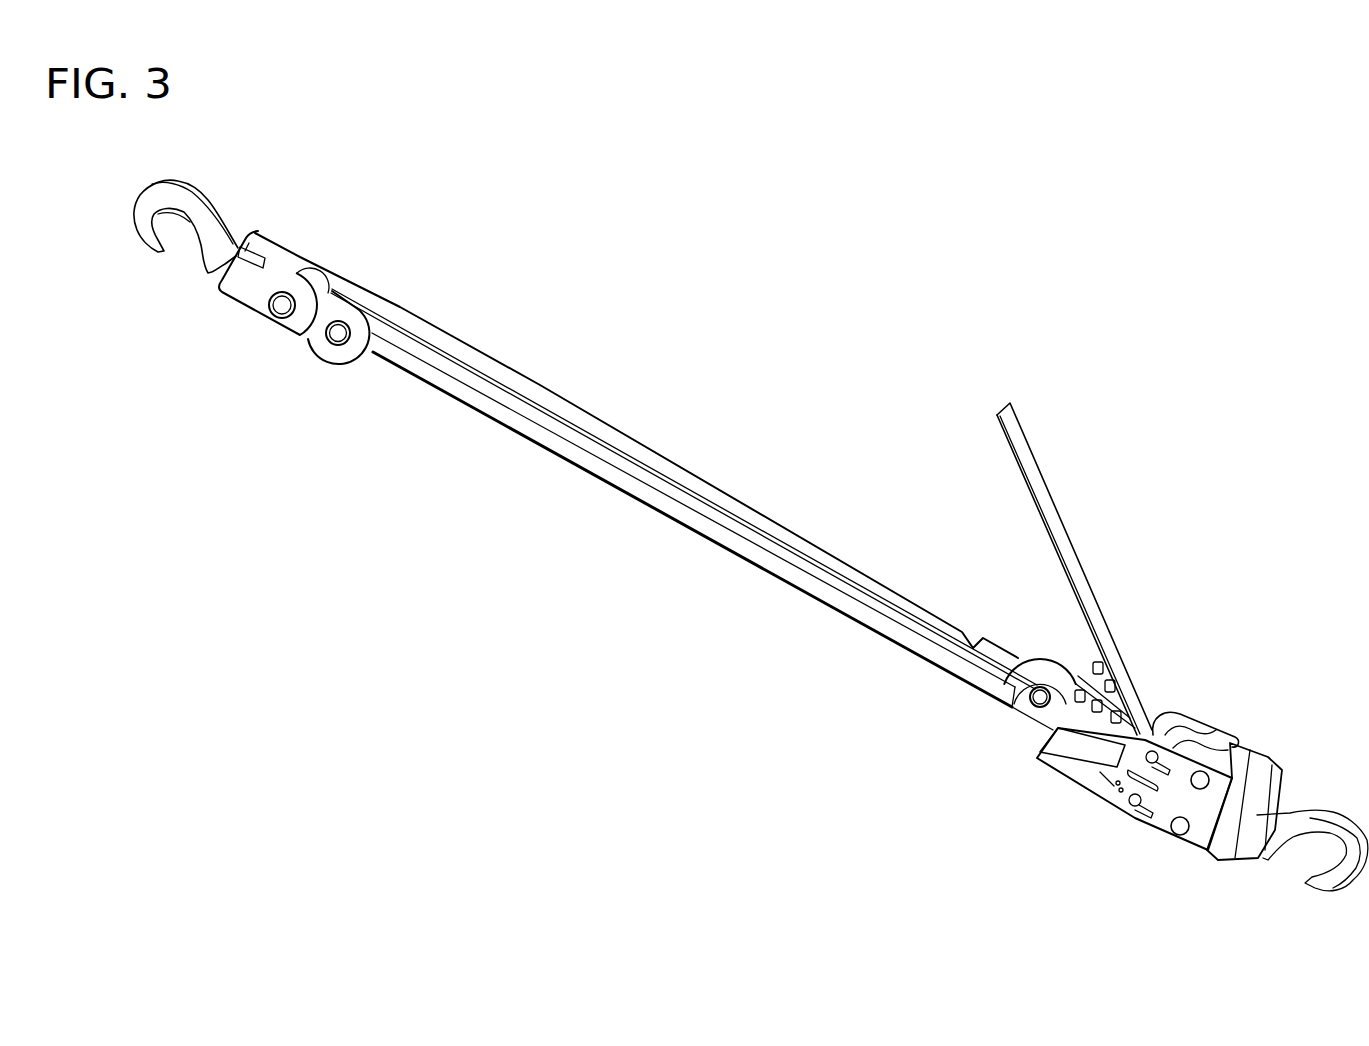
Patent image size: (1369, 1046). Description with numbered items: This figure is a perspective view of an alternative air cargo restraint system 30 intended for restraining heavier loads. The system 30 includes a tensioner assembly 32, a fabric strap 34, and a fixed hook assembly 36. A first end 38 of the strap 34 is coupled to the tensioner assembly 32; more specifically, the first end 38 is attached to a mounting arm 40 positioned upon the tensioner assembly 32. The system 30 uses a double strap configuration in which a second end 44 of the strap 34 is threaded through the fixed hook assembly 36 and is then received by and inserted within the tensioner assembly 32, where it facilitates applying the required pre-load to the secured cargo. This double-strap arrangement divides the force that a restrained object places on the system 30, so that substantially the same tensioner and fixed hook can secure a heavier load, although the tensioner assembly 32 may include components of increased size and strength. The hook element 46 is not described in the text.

The air cargo restraint system 30 is at (578, 545).
The tensioner assembly 32 is at (1200, 727).
The fabric strap 34 is at (668, 460).
The fixed hook assembly 36 is at (337, 277).
The first end 38 is at (1025, 665).
The mounting arm 40 is at (1030, 707).
The second end 44 is at (997, 417).
The hook 46 is at (186, 226).